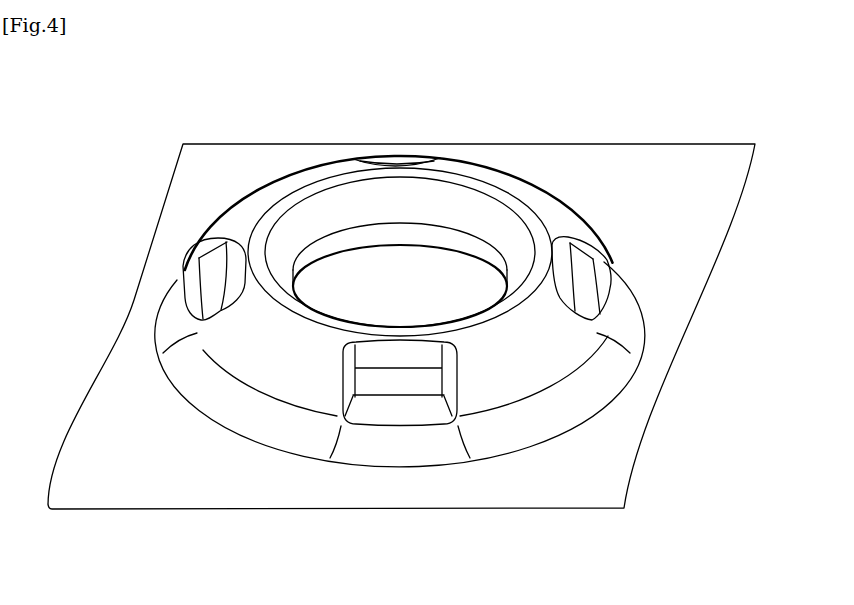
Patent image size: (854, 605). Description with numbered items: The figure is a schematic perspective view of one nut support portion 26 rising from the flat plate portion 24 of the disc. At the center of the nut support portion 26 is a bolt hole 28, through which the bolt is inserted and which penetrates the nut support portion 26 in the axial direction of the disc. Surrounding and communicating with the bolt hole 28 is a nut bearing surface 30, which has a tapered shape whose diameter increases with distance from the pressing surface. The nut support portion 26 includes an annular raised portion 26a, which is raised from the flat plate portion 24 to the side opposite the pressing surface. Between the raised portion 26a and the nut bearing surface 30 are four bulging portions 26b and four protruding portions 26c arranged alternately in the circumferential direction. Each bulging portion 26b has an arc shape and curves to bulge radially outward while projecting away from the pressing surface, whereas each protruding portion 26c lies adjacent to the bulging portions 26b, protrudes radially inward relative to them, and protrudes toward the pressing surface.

The flat plate portion 24 is at (253, 175).
The nut support portion 26 is at (519, 177).
The raised portion 26a is at (524, 433).
The bulging portion 26b is at (240, 215).
The protruding portion 26c is at (398, 165).
The bolt hole 28 is at (343, 242).
The nut bearing surface 30 is at (467, 213).